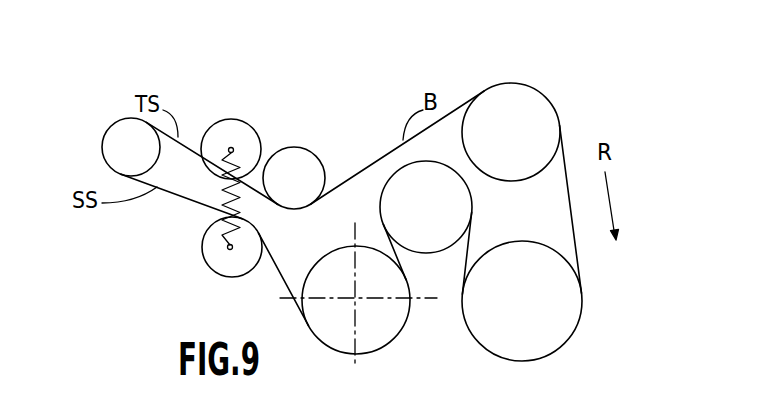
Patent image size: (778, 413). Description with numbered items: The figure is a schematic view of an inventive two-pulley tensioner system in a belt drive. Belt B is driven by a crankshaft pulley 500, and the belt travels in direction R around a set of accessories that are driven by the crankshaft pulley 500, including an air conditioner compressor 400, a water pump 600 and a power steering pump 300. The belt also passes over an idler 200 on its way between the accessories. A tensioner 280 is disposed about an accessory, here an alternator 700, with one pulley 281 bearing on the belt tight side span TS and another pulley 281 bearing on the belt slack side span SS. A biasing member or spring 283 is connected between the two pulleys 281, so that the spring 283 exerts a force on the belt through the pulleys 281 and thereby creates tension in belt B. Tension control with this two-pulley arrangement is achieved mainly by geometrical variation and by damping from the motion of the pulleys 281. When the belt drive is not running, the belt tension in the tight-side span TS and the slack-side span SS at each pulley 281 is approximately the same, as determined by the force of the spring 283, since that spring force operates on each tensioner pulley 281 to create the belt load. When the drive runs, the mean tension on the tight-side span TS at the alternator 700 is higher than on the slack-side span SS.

The tensioner 280 is at (235, 74).
The pulley 281 is at (208, 128).
The spring 283 is at (222, 192).
The alternator 700 is at (102, 153).
The idler pulley 200 is at (306, 142).
The power steering pump 300 is at (552, 102).
The water pump 600 is at (472, 202).
The air conditioner compressor 400 is at (578, 318).
The crankshaft pulley 500 is at (403, 323).